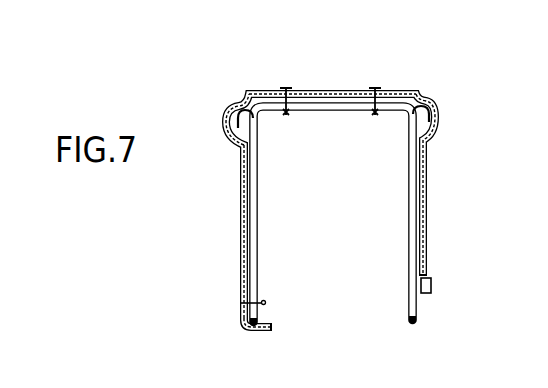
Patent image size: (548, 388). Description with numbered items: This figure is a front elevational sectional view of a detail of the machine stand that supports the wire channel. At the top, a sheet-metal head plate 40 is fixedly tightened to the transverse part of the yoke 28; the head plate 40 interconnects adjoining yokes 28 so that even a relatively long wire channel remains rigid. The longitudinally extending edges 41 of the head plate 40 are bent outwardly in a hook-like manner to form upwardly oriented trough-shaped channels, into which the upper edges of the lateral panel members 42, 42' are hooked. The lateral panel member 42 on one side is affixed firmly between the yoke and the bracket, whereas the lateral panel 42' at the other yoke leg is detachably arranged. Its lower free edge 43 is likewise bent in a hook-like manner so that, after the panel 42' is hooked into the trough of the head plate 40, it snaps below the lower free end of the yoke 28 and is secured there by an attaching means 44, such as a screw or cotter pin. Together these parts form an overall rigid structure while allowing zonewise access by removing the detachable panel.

The yoke 28 is at (339, 105).
The sheet-metal head plate 40 is at (353, 89).
The longitudinally extending edges 41 is at (220, 108).
The lateral panel member 42 is at (449, 216).
The lateral panel member 42' is at (213, 232).
The lower free edge 43 is at (267, 333).
The attaching means 44 is at (240, 303).